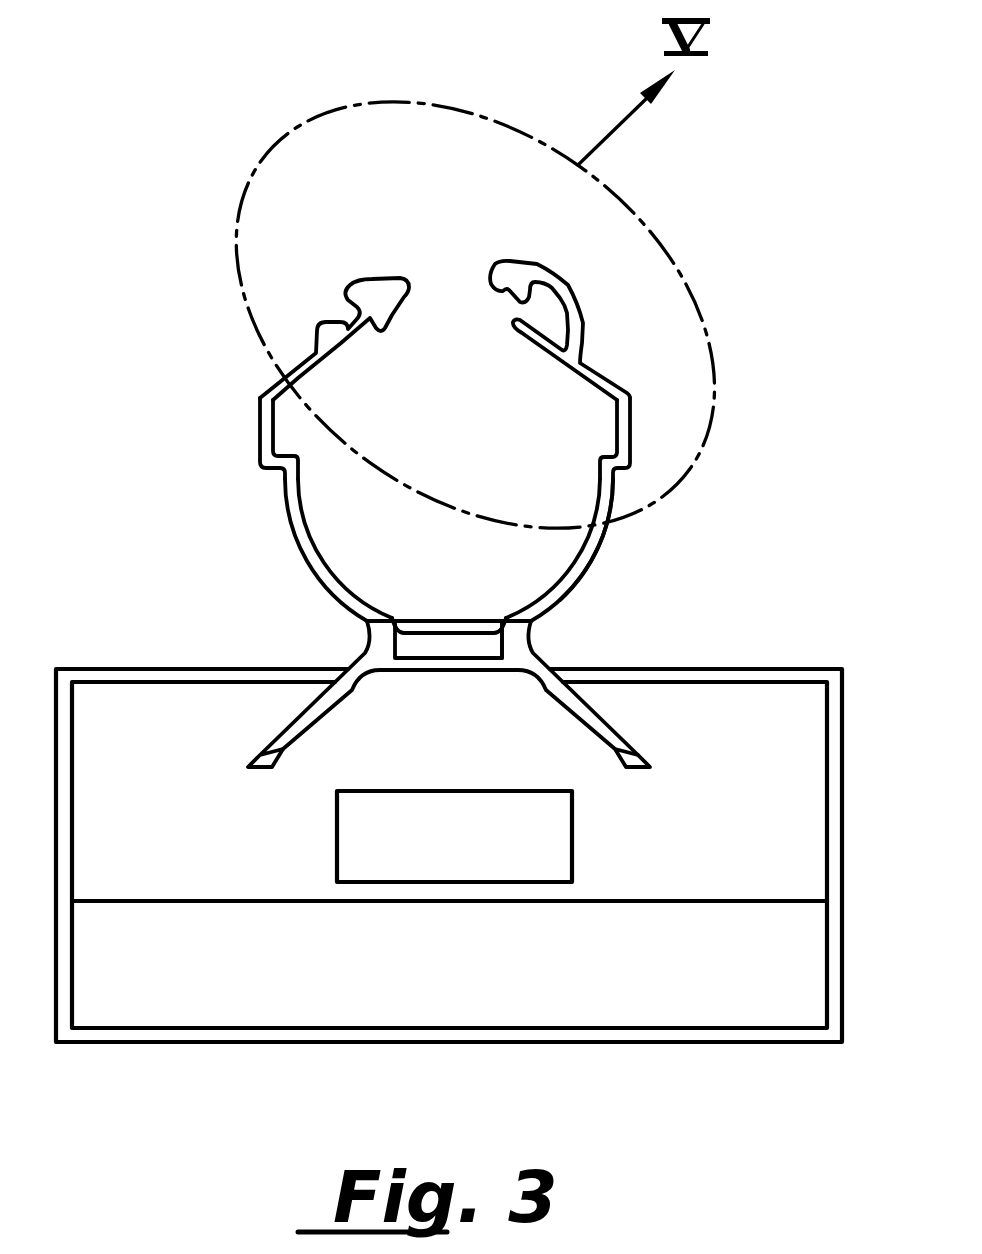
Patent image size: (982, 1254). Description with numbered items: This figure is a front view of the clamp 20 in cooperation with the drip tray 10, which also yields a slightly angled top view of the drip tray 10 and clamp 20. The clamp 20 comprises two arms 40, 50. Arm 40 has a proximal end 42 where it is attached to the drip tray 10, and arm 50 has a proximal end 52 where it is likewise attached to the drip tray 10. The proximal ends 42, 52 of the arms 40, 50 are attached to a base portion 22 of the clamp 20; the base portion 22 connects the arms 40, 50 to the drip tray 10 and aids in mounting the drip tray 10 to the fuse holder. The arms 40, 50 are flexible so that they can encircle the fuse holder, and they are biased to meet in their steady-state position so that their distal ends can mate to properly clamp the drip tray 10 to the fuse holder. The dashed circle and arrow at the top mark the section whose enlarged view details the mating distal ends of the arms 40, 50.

The drip tray 10 is at (762, 843).
The clamp 20 is at (214, 419).
The base portion 22 is at (537, 645).
The arm 40 is at (282, 492).
The proximal end 42 is at (367, 622).
The arm 50 is at (603, 538).
The proximal end 52 is at (533, 617).